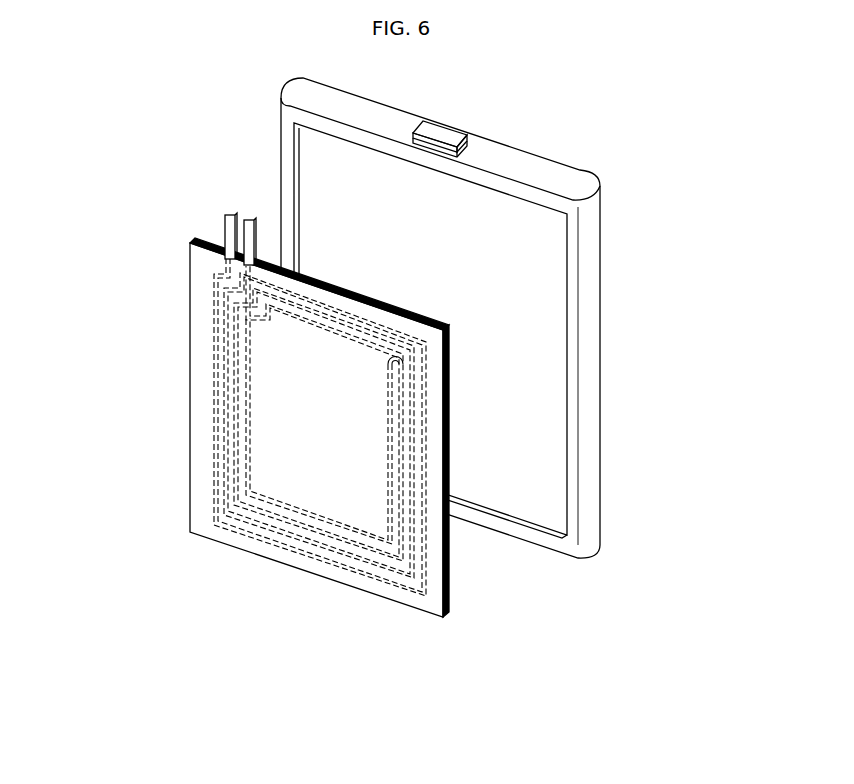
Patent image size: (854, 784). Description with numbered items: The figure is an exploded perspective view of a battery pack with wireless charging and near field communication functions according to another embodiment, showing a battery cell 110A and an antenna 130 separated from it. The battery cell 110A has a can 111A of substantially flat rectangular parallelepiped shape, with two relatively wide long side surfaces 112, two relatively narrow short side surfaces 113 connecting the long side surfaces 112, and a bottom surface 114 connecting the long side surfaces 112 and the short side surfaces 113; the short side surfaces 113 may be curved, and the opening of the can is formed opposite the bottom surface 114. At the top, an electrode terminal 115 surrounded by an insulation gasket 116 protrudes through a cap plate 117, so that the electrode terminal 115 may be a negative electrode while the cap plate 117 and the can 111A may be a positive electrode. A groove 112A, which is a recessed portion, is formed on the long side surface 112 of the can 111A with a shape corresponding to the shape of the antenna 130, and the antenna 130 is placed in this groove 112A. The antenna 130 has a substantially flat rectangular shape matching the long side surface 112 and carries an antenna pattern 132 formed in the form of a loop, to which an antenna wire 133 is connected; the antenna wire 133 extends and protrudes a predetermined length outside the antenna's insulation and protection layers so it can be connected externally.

The battery cell 110A is at (484, 346).
The can 111A is at (587, 562).
The long side surface 112 is at (537, 537).
The groove 112A is at (542, 272).
The short side surface 113 is at (585, 395).
The bottom surface 114 is at (497, 533).
The electrode terminal 115 is at (442, 128).
The insulation gasket 116 is at (468, 132).
The cap plate 117 is at (537, 160).
The antenna 130 is at (283, 391).
The antenna pattern 132 is at (217, 400).
The antenna wire 133 is at (229, 209).